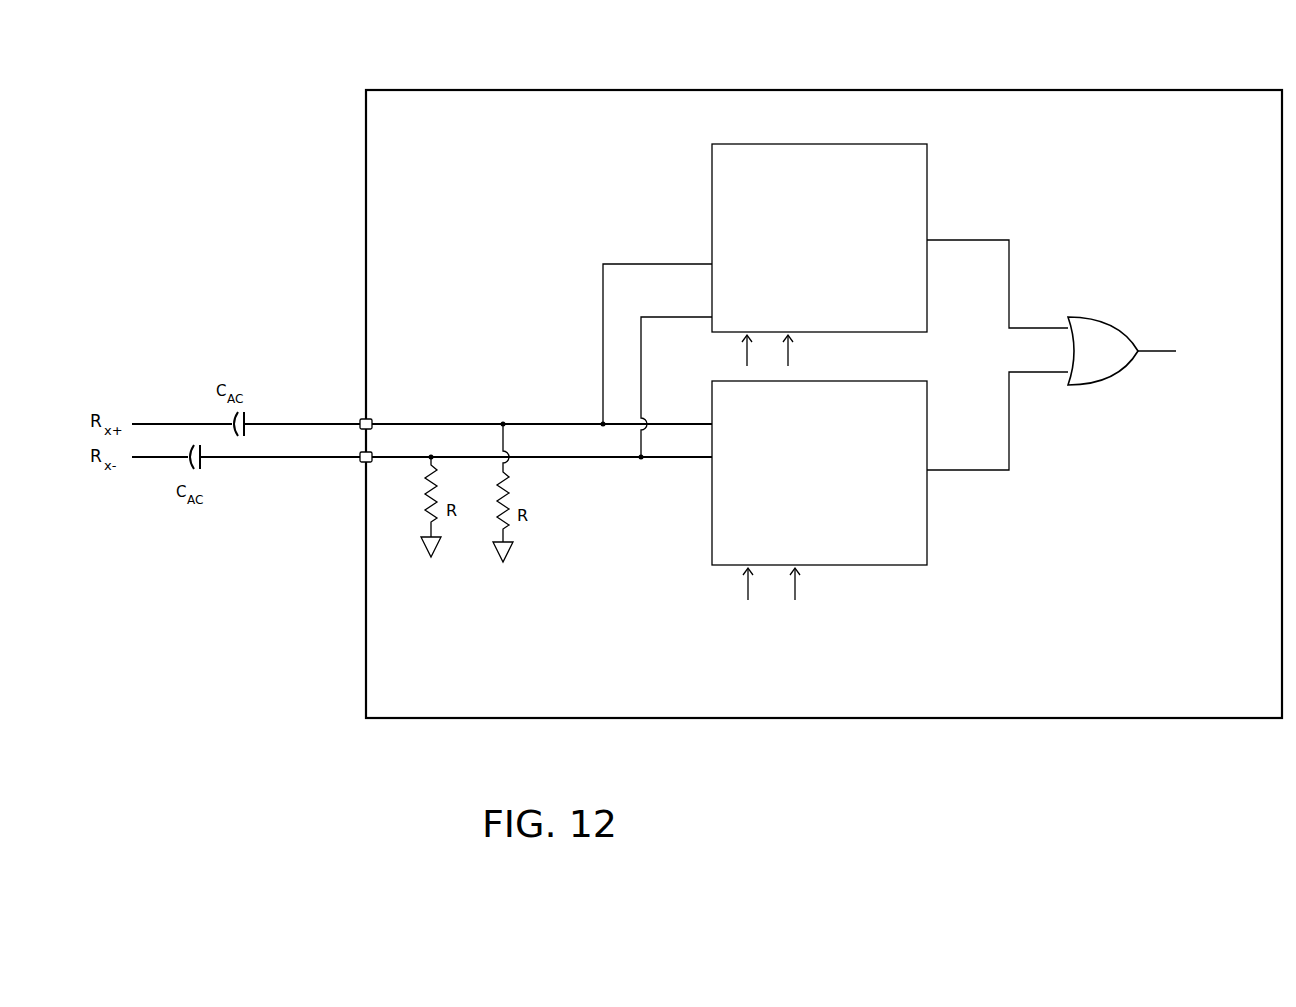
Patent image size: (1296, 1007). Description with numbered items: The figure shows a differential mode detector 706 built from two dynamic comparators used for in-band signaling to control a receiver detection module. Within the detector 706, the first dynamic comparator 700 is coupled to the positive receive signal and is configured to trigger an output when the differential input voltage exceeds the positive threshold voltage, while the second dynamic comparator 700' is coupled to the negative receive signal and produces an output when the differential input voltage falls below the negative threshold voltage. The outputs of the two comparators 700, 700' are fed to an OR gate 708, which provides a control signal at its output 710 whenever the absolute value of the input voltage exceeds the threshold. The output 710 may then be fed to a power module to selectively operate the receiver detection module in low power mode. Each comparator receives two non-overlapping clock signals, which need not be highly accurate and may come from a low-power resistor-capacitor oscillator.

The differential mode detector 706 is at (598, 90).
The dynamic comparator 700 is at (819, 242).
The dynamic comparator 700' is at (819, 479).
The OR gate 708 is at (1097, 318).
The output 710 is at (1158, 348).